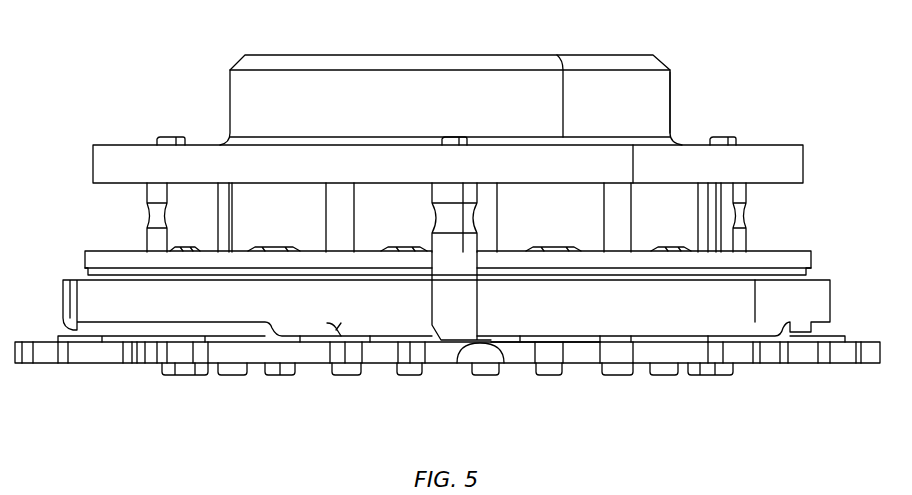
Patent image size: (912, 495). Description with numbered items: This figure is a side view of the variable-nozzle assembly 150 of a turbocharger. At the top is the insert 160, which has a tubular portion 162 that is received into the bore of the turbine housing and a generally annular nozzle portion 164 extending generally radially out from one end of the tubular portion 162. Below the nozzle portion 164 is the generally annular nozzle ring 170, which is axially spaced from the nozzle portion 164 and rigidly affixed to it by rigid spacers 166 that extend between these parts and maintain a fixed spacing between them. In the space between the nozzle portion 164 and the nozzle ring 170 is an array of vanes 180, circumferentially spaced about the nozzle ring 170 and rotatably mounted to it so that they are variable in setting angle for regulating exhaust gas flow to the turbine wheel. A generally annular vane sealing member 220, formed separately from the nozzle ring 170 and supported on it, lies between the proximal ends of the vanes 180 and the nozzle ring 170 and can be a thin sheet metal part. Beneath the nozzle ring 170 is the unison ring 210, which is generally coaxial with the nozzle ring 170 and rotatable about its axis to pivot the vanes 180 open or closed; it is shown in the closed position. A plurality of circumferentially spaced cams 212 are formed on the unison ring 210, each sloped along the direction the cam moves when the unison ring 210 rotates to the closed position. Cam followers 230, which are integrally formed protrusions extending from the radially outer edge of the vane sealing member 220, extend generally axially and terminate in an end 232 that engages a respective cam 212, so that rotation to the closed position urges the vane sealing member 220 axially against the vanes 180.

The variable-nozzle assembly 150 is at (216, 96).
The insert 160 is at (670, 68).
The tubular portion 162 is at (658, 105).
The nozzle portion 164 is at (750, 162).
The rigid spacers 166 is at (452, 215).
The nozzle ring 170 is at (811, 300).
The vanes 180 is at (195, 197).
The unison ring 210 is at (810, 362).
The cams 212 is at (491, 343).
The vane sealing member 220 is at (97, 262).
The cam followers 230 is at (452, 298).
The end 232 is at (462, 342).